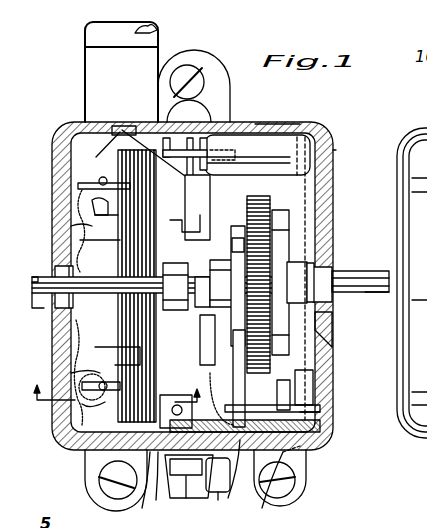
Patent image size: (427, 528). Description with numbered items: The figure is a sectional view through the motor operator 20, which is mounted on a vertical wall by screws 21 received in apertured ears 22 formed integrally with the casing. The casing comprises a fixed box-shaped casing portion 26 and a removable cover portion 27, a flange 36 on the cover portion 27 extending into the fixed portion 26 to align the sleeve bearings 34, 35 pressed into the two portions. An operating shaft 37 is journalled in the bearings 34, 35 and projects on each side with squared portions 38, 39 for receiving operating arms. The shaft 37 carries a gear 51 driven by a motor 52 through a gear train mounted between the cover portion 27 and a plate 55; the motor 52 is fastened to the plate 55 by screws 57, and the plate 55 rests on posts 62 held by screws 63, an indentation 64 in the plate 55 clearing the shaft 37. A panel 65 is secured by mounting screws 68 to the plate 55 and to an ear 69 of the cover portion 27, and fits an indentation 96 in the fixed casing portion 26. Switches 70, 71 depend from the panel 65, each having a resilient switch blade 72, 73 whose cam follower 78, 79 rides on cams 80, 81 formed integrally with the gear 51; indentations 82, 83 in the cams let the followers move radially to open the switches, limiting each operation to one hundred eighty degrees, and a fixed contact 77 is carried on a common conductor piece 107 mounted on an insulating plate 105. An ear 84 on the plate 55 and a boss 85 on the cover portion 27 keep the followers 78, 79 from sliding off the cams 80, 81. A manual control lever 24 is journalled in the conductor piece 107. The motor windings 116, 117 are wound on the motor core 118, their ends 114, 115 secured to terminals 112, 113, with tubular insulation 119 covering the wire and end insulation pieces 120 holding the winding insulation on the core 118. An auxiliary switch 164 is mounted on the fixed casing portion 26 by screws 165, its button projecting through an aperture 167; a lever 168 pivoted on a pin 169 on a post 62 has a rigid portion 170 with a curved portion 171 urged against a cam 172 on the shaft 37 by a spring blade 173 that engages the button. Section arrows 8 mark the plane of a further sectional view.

The section line 8- 8 is at (113, 385).
The motor operator 20 is at (347, 126).
The screws 21 is at (202, 72).
The apertured ears 22 is at (226, 92).
The manual control lever 24 is at (188, 498).
The box-shaped casing portion 26 is at (262, 124).
The cover portion 27 is at (337, 151).
The sleeve bearing 34 is at (64, 286).
The sleeve bearing 35 is at (324, 276).
The flange 36 is at (286, 130).
The operating shaft 37 is at (345, 279).
The squared portion 38 is at (367, 294).
The squared portion 39 is at (47, 302).
The gear 51 is at (259, 195).
The motor 52 is at (108, 176).
The plate 55 is at (212, 306).
The screws 57 is at (98, 223).
The posts 62 is at (250, 136).
The screws 63 is at (186, 167).
The indentation 64 is at (222, 258).
The panel 65 is at (219, 510).
The mounting screw 68 is at (302, 449).
The ear 69 is at (312, 435).
The switch 70 is at (168, 396).
The switch 71 is at (300, 407).
The resilient switch blade 72 is at (218, 475).
The resilient switch blade 73 is at (330, 378).
The fixed contact 77 is at (312, 421).
The cam follower 78 is at (240, 397).
The cam follower 79 is at (278, 378).
The cam 80 is at (234, 240).
The cam 81 is at (282, 208).
The indentation 82 is at (238, 224).
The indentation 83 is at (304, 304).
The ear 84 is at (214, 358).
The boss 85 is at (334, 355).
The indentation 96 is at (140, 490).
The plate of insulating material 105 is at (189, 476).
The common conductor piece 107 is at (268, 489).
The terminal 112 is at (162, 481).
The terminal 113 is at (231, 475).
The winding end 114 is at (120, 380).
The winding end 115 is at (104, 209).
The motor winding 116 is at (78, 371).
The motor winding 117 is at (80, 225).
The motor core 118 is at (140, 357).
The tubular insulation 119 is at (80, 198).
The end insulation pieces 120 is at (108, 418).
The auxiliary switch 164 is at (80, 80).
The screws 165 is at (158, 30).
The aperture 167 is at (125, 125).
The lever 168 is at (186, 223).
The pivot pin 169 is at (178, 120).
The rigid portion 170 is at (227, 150).
The curved portion 171 is at (197, 207).
The cam 172 is at (149, 286).
The resilient spring blade 173 is at (96, 150).